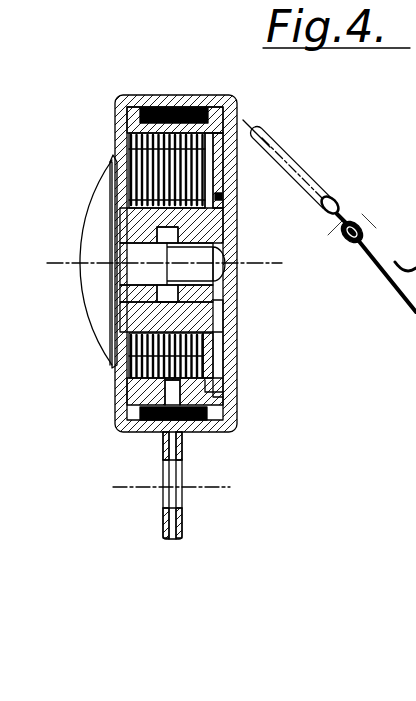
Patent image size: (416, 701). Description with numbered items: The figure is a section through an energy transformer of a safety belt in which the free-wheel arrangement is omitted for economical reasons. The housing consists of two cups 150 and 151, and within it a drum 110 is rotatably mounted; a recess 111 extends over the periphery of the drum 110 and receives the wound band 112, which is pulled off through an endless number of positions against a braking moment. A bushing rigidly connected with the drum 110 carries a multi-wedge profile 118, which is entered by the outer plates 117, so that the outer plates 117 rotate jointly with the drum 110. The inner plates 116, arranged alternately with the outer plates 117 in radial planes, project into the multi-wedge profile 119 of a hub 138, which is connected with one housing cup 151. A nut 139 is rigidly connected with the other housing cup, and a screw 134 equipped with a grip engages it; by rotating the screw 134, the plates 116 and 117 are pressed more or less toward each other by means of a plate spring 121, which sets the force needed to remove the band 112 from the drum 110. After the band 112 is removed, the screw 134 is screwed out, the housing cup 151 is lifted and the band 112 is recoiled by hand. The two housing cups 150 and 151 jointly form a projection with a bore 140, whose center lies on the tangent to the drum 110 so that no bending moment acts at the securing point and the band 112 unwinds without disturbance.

The drum 110 is at (140, 397).
The recess 111 is at (160, 425).
The band 112 is at (395, 280).
The inner plates 116 is at (118, 177).
The outer plates 117 is at (123, 140).
The multi-wedge profile 118 is at (240, 120).
The multi-wedge profile 119 is at (233, 212).
The plate spring 121 is at (233, 388).
The screw 134 is at (93, 310).
The hub 138 is at (147, 310).
The nut 139 is at (233, 288).
The bore 140 is at (178, 497).
The housing cup 150 is at (142, 96).
The housing cup 151 is at (208, 97).